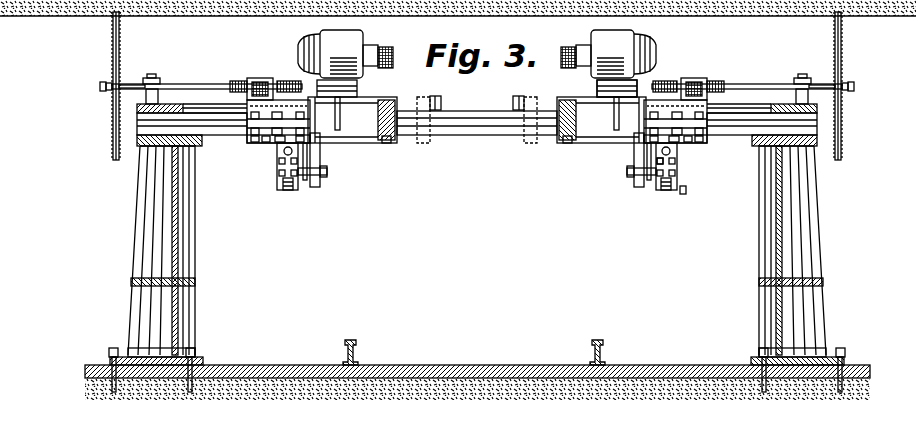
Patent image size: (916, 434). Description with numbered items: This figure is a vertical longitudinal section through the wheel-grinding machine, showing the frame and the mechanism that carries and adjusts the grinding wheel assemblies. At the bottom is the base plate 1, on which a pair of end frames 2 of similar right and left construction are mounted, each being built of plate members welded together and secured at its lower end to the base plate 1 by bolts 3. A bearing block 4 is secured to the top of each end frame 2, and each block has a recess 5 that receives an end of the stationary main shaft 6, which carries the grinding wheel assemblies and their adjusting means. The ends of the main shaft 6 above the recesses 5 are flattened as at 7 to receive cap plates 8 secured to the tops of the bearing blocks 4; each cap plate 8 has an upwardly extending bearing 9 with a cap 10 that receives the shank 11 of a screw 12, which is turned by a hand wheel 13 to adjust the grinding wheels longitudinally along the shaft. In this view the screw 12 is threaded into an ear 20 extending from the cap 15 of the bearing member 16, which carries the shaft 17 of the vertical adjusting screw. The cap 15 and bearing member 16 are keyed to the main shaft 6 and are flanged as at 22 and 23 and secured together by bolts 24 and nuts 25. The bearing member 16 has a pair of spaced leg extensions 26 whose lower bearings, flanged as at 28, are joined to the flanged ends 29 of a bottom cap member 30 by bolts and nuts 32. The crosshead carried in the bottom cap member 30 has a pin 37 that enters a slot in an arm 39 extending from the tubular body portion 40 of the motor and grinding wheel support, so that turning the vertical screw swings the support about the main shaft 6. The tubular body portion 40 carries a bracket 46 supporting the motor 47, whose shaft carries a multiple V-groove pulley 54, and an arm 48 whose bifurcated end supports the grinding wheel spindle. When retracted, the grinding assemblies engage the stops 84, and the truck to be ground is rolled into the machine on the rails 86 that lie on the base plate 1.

The base plate 1 is at (465, 365).
The end frame 2 is at (135, 256).
The bolt 3 is at (192, 349).
The bearing block 4 is at (140, 141).
The recess 5 is at (154, 143).
The stationary main shaft 6 is at (490, 133).
The flattened surface 7 is at (152, 117).
The cap plate 8 is at (137, 109).
The bearing 9 is at (148, 100).
The cap 10 is at (157, 80).
The shank 11 is at (130, 83).
The screw 12 is at (246, 85).
The hand wheel 13 is at (113, 33).
The cap 15 is at (282, 82).
The bearing member 16 is at (250, 139).
The shaft 17 is at (281, 167).
The ear 20 is at (261, 78).
The flange 22 is at (247, 113).
The flange 23 is at (322, 136).
The bolt 24 is at (259, 108).
The nut 25 is at (263, 141).
The leg extension 26 is at (277, 142).
The flange 28 is at (673, 168).
The flanged end 29 is at (306, 180).
The bottom cap member 30 is at (284, 184).
The nut 32 is at (683, 195).
The pin 37 is at (322, 176).
The arm 39 is at (322, 150).
The tubular body portion 40 is at (384, 147).
The bracket 46 is at (600, 95).
The motor 47 is at (348, 44).
The arm 48 is at (389, 141).
The multiple V-groove pulley 54 is at (391, 51).
The stop 84 is at (442, 103).
The rail 86 is at (359, 345).